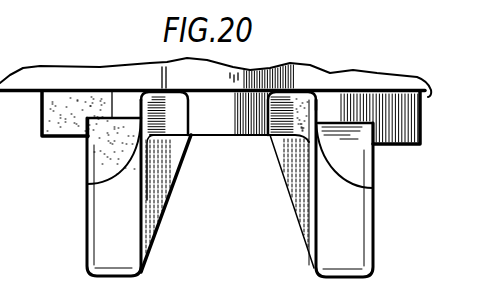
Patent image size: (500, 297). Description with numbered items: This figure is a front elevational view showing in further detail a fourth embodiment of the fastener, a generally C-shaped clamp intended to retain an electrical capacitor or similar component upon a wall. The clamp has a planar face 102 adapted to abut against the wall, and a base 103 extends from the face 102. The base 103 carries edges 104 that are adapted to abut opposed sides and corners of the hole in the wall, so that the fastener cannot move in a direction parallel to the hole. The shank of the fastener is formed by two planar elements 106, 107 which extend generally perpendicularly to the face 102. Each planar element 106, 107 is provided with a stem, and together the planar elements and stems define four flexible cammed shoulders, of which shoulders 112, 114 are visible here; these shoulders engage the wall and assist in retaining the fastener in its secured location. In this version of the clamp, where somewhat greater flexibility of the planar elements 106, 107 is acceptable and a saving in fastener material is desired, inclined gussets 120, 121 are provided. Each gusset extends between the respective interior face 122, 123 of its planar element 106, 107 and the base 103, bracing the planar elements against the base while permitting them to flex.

The planar face 102 is at (62, 92).
The base 103 is at (274, 72).
The edges 104 is at (224, 120).
The planar element 106 is at (95, 208).
The planar element 107 is at (348, 196).
The flexible cammed shoulder 112 is at (110, 146).
The flexible cammed shoulder 114 is at (356, 146).
The inclined gusset 120 is at (170, 156).
The inclined gusset 121 is at (292, 174).
The interior face 122 is at (148, 220).
The interior face 123 is at (312, 230).